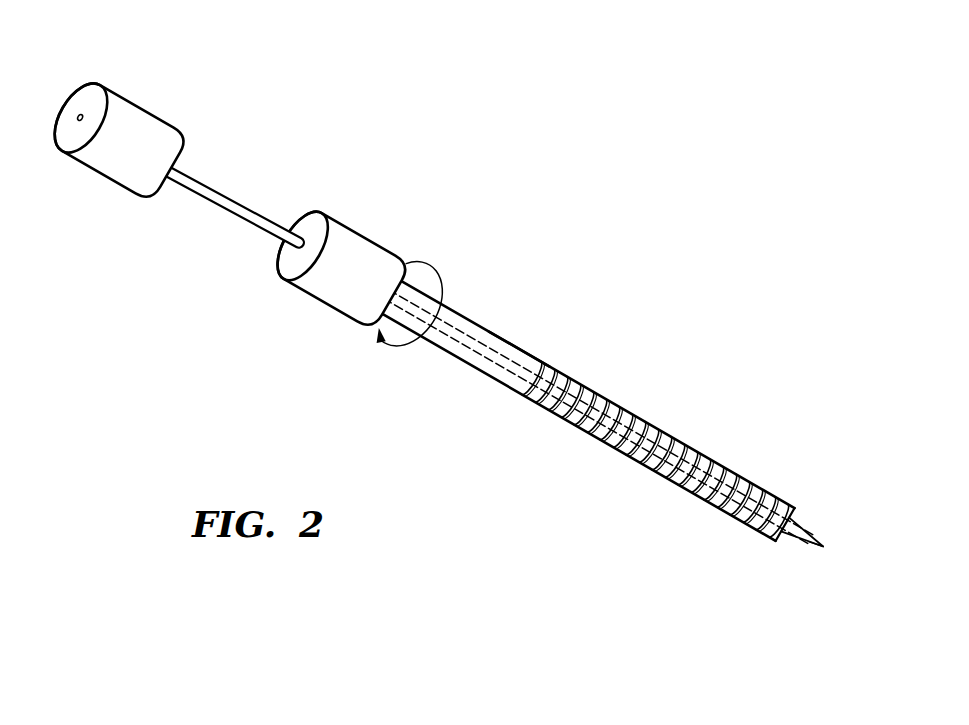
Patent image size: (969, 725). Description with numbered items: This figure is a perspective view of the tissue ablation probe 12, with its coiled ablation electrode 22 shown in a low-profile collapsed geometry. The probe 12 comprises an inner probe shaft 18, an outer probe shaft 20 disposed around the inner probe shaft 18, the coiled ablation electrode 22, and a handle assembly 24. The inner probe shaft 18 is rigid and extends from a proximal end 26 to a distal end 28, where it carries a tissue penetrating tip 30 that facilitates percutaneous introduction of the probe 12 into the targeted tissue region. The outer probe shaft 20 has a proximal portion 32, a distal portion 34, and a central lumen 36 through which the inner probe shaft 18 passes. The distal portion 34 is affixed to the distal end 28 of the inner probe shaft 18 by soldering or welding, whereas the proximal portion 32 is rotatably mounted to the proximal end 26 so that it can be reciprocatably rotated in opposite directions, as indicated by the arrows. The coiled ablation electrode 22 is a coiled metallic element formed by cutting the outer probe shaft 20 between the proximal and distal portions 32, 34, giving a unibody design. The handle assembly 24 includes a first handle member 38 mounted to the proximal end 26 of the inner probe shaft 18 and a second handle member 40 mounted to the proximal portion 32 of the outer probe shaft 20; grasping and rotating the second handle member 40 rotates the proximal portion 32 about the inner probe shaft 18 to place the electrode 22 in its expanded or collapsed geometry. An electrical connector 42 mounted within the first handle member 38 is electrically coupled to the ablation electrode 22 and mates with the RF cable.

The tissue ablation probe 12 is at (467, 344).
The inner probe shaft 18 is at (615, 374).
The outer probe shaft 20 is at (523, 384).
The coiled ablation electrode 22 is at (652, 422).
The handle assembly 24 is at (232, 208).
The proximal end 26 is at (242, 200).
The distal end 28 is at (797, 537).
The tissue penetrating tip 30 is at (827, 543).
The proximal portion 32 is at (502, 333).
The distal portion 34 is at (785, 498).
The central lumen 36 is at (462, 345).
The first handle member 38 is at (128, 107).
The second handle member 40 is at (357, 232).
The electrical connector 42 is at (78, 116).